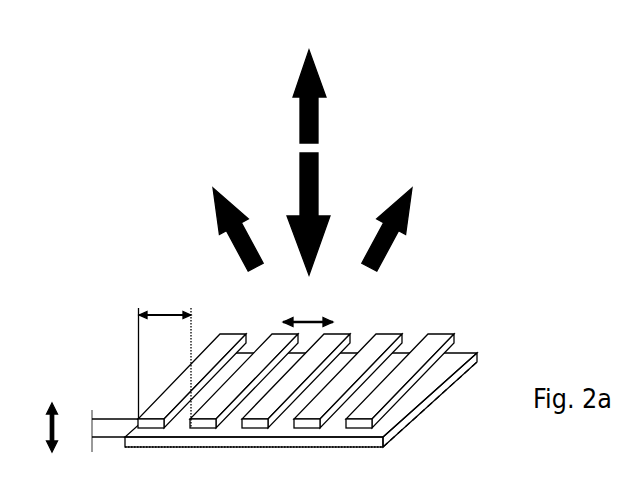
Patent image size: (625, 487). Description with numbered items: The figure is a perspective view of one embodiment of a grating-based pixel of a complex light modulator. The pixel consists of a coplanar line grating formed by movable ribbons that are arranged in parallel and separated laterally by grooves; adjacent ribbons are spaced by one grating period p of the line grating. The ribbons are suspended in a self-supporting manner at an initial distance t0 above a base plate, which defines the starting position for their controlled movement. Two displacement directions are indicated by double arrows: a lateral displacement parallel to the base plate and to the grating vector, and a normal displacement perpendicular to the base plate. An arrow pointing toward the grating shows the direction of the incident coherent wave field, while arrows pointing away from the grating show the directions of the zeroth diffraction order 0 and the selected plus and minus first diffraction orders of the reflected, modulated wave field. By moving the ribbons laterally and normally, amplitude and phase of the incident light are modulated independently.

The zeroth diffraction order 0 is at (308, 143).
The grating period p is at (296, 352).
The initial distance t0 is at (275, 402).